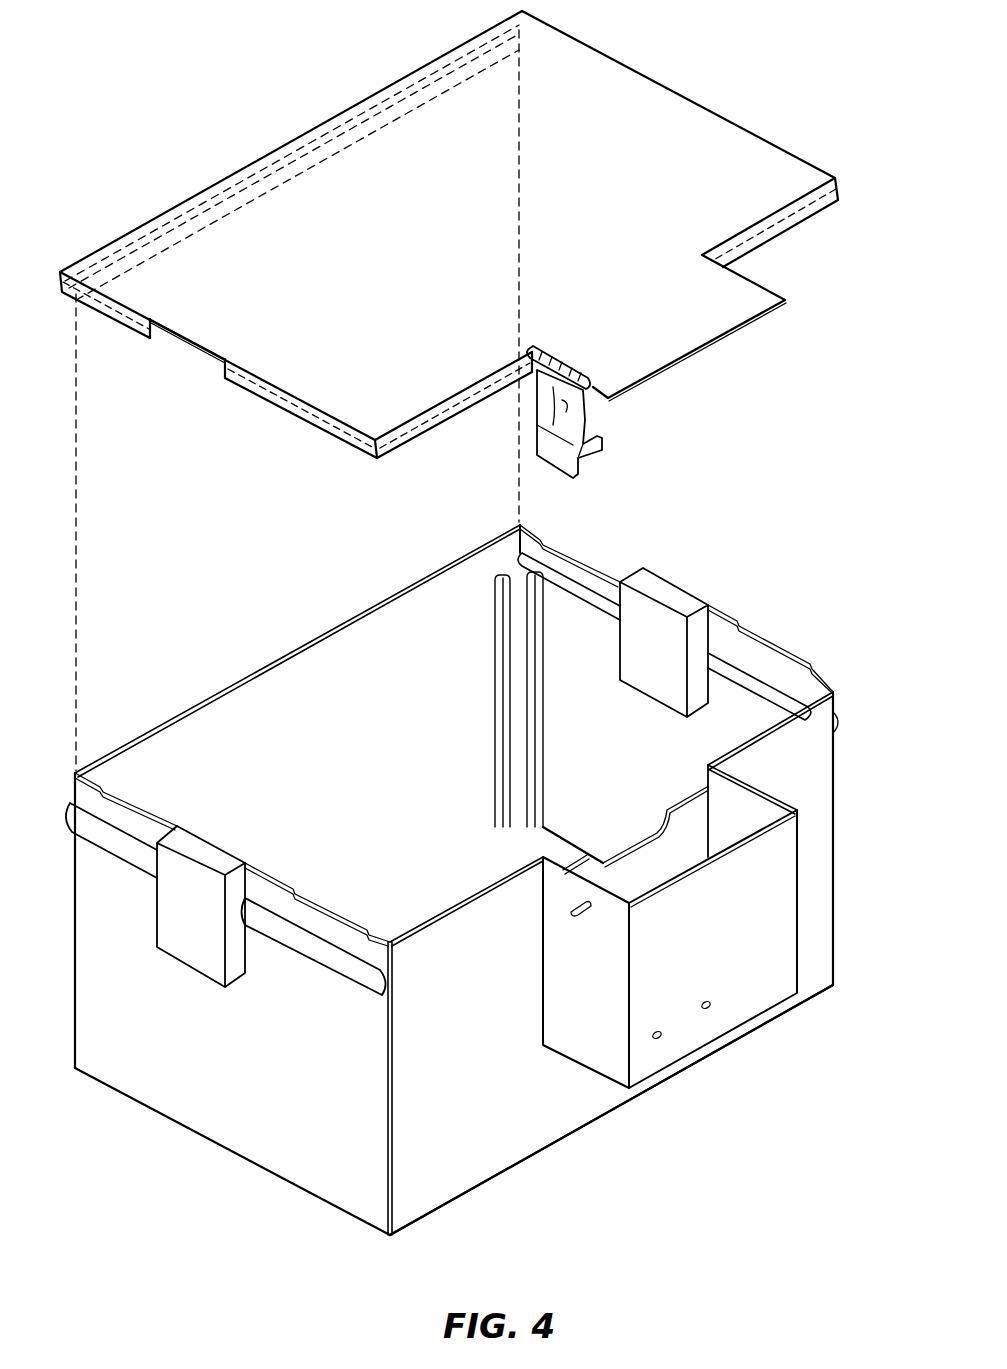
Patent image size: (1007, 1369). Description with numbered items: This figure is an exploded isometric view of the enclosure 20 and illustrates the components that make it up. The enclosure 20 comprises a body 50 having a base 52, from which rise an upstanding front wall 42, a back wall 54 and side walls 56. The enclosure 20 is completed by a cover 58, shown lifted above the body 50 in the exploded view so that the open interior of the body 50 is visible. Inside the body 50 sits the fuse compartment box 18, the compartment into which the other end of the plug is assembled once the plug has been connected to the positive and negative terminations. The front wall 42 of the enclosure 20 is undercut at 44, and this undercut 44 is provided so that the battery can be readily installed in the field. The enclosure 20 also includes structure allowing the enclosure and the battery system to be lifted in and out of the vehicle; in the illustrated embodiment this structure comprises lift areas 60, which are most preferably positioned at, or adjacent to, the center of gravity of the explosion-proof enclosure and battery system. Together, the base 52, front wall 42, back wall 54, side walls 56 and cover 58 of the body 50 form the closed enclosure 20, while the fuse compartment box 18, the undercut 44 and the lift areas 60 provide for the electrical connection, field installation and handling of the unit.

The fuse compartment box 18 is at (672, 1050).
The enclosure 20 is at (772, 498).
The front wall 42 is at (518, 1140).
The undercut 44 is at (673, 813).
The body 50 is at (807, 661).
The base 52 is at (449, 906).
The back wall 54 is at (290, 708).
The side walls 56 is at (577, 808).
The cover 58 is at (672, 110).
The lift areas 60 is at (188, 857).